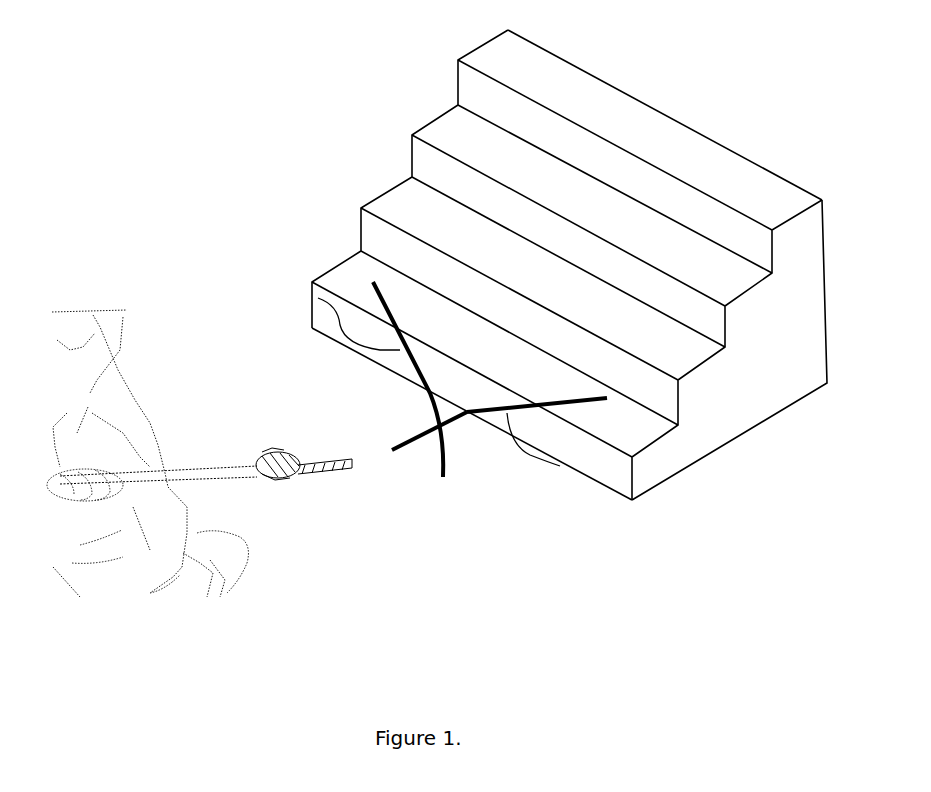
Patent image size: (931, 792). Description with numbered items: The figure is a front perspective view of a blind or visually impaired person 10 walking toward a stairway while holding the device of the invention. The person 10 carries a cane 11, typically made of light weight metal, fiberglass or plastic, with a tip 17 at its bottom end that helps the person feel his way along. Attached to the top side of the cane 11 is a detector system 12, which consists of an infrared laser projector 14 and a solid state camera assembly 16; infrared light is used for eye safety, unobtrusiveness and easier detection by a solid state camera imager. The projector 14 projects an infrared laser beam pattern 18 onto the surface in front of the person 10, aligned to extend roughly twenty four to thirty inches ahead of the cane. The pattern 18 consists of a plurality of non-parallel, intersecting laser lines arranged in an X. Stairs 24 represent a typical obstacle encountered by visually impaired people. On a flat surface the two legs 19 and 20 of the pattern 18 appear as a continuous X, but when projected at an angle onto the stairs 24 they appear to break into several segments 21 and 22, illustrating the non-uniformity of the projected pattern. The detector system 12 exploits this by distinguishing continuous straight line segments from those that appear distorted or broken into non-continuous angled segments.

The blind or visually impaired person 10 is at (150, 418).
The cane 11 is at (185, 473).
The detector system 12 is at (290, 474).
The infrared laser projector 14 is at (272, 450).
The solid state camera assembly 16 is at (302, 455).
The tip 17 is at (350, 472).
The infrared laser beam pattern 18 is at (440, 425).
The leg of pattern 19 is at (417, 435).
The leg of pattern 20 is at (440, 478).
The segment 21 is at (310, 293).
The segment 22 is at (560, 466).
The stairs 24 is at (697, 467).